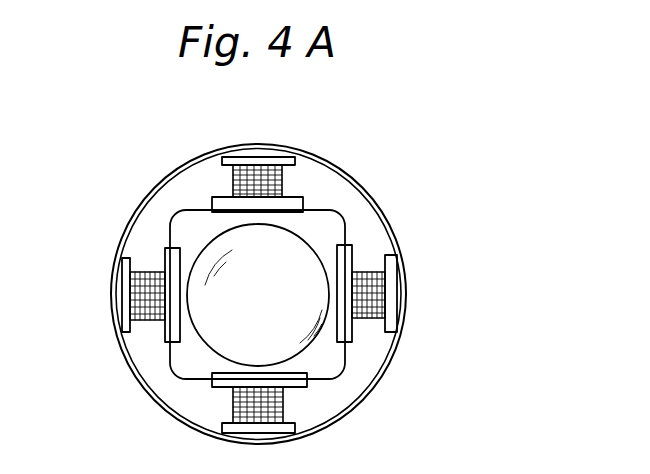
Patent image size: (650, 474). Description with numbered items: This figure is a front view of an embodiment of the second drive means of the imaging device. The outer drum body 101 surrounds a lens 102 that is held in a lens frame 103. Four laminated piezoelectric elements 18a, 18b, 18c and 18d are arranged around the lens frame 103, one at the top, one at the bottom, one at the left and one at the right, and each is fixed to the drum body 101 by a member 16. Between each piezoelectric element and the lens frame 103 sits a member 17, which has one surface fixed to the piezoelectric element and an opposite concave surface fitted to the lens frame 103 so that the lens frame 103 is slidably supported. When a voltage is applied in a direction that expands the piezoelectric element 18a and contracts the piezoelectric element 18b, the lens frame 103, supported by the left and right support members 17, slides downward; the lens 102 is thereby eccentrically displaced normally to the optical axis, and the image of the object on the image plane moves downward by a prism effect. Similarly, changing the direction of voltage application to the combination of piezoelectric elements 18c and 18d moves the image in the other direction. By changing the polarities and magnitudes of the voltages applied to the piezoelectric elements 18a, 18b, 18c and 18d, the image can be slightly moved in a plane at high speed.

The member 16 is at (277, 157).
The member 17 is at (170, 248).
The laminated piezoelectric element 18a is at (284, 182).
The laminated piezoelectric element 18b is at (237, 404).
The laminated piezoelectric element 18c is at (148, 322).
The laminated piezoelectric element 18d is at (373, 273).
The drum body 101 is at (345, 172).
The lens 102 is at (295, 272).
The lens frame 103 is at (330, 367).